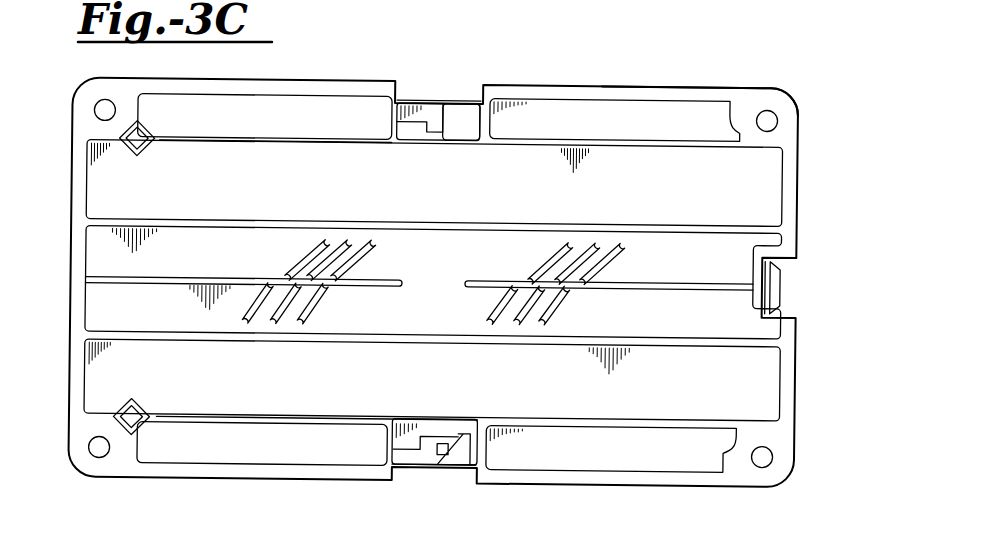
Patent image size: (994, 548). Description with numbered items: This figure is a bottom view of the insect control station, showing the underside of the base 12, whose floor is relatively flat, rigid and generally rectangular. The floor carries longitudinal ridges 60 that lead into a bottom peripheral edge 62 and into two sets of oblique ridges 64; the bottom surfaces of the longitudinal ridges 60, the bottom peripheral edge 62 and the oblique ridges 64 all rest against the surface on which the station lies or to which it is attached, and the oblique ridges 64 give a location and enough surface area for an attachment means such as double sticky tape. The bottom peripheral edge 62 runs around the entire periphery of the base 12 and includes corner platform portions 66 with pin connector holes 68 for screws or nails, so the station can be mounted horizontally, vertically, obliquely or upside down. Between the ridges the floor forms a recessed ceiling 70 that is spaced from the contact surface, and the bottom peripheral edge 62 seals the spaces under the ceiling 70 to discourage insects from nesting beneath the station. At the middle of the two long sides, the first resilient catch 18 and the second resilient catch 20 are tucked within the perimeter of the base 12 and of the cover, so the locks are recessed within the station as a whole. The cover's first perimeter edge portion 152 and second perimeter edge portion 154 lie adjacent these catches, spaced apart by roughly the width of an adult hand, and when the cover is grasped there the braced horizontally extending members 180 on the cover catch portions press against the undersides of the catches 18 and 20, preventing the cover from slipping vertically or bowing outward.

The base 12 is at (793, 95).
The first resilient catch 18 is at (401, 465).
The second resilient catch 20 is at (413, 102).
The longitudinal ridges 60 is at (277, 221).
The bottom peripheral edge 62 is at (583, 88).
The oblique ridges 64 is at (566, 304).
The corner platform portions 66 is at (742, 100).
The pin connector holes 68 is at (778, 117).
The ceiling 70 is at (645, 206).
The first perimeter edge portion 152 is at (458, 468).
The second perimeter edge portion 154 is at (442, 106).
The braced horizontally extending member 180 is at (470, 124).